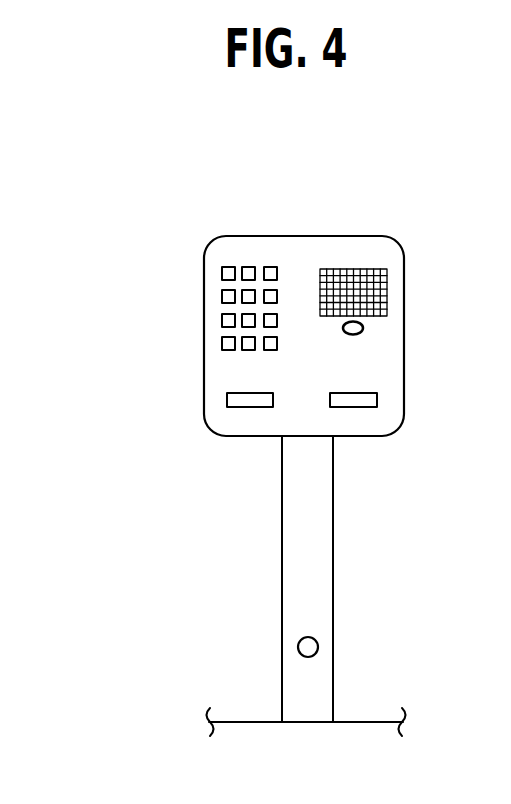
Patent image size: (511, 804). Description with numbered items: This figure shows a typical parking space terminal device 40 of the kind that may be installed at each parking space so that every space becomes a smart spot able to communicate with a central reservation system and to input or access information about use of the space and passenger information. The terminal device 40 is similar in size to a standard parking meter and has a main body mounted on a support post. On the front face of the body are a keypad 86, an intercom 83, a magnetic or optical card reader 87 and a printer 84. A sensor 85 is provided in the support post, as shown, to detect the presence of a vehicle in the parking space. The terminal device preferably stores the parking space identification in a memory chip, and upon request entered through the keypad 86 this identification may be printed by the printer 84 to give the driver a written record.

The terminal device 40 is at (322, 235).
The intercom 83 is at (388, 285).
The printer 84 is at (377, 400).
The sensor 85 is at (318, 642).
The keypad 86 is at (221, 296).
The card reader 87 is at (240, 407).